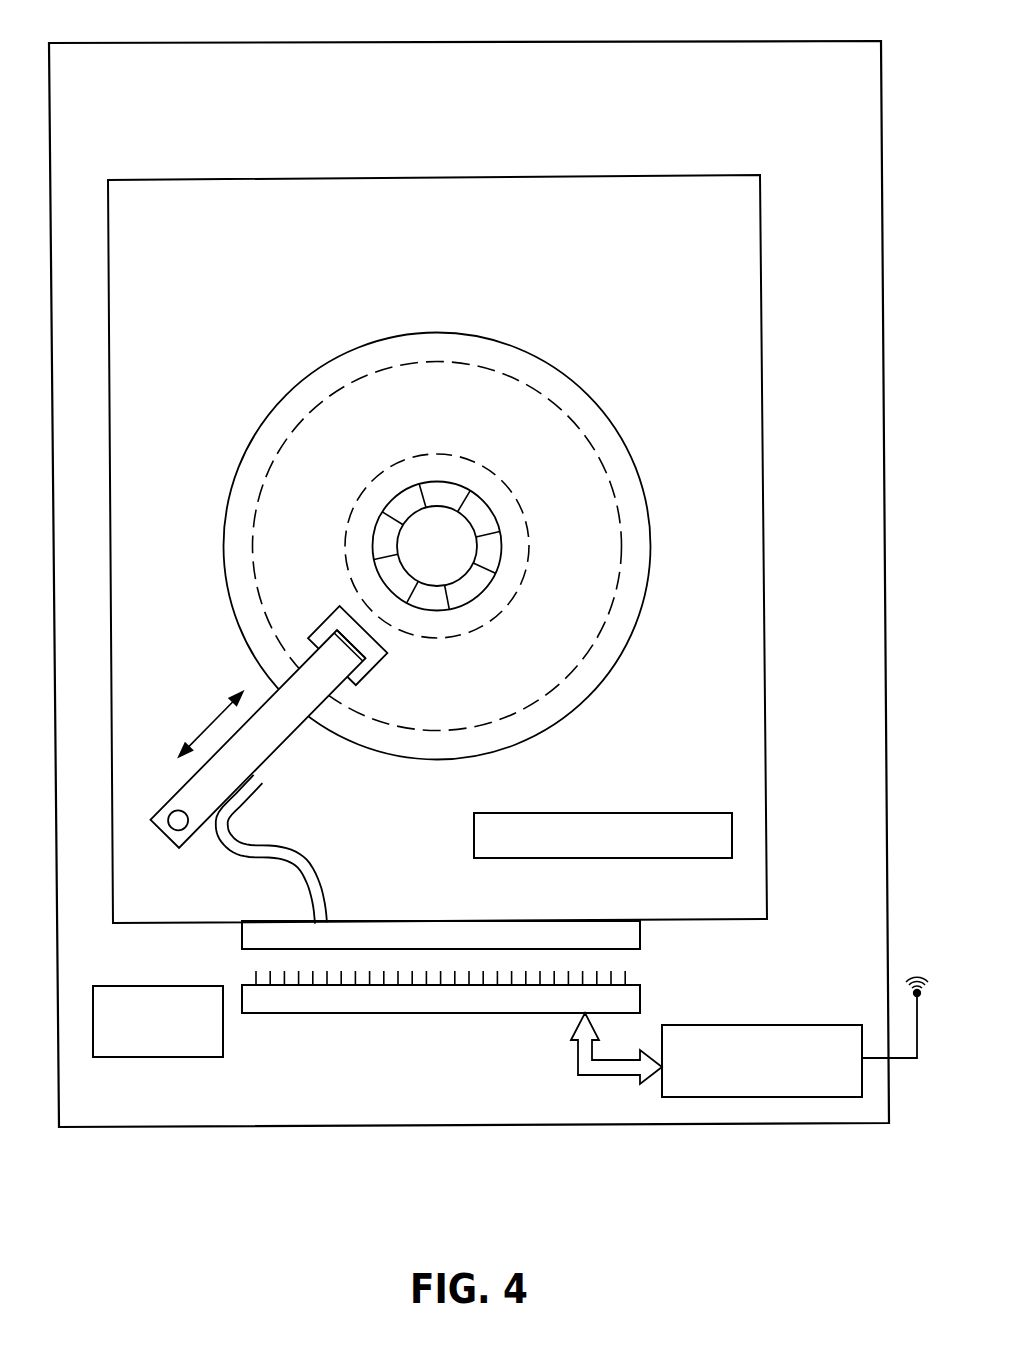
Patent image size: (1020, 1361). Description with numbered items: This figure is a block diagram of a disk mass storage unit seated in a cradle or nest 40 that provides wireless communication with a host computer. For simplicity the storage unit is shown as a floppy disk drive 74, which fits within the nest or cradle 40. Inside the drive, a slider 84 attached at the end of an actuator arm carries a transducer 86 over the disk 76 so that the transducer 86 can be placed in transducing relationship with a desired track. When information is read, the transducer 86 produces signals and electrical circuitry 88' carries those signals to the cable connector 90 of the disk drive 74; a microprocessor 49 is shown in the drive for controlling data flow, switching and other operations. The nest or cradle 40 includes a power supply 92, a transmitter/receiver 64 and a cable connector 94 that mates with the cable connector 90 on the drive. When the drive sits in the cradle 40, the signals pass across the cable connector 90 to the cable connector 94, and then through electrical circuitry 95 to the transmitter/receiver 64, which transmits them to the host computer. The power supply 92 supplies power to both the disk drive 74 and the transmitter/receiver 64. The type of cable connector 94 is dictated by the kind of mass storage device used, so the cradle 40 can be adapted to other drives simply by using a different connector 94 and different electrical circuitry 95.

The cradle or nest 40 is at (470, 41).
The floppy disk drive 74 is at (576, 160).
The disk 76 is at (675, 250).
The slider 84 is at (316, 627).
The transducer 86 is at (383, 665).
The electrical circuitry 88' is at (271, 849).
The cable connector 90 is at (242, 937).
The cable connector 94 is at (322, 1013).
The power supply 92 is at (154, 1058).
The electrical circuitry 95 is at (578, 1068).
The transmitter/receiver 64 is at (795, 1023).
The microprocessor 49 is at (633, 812).